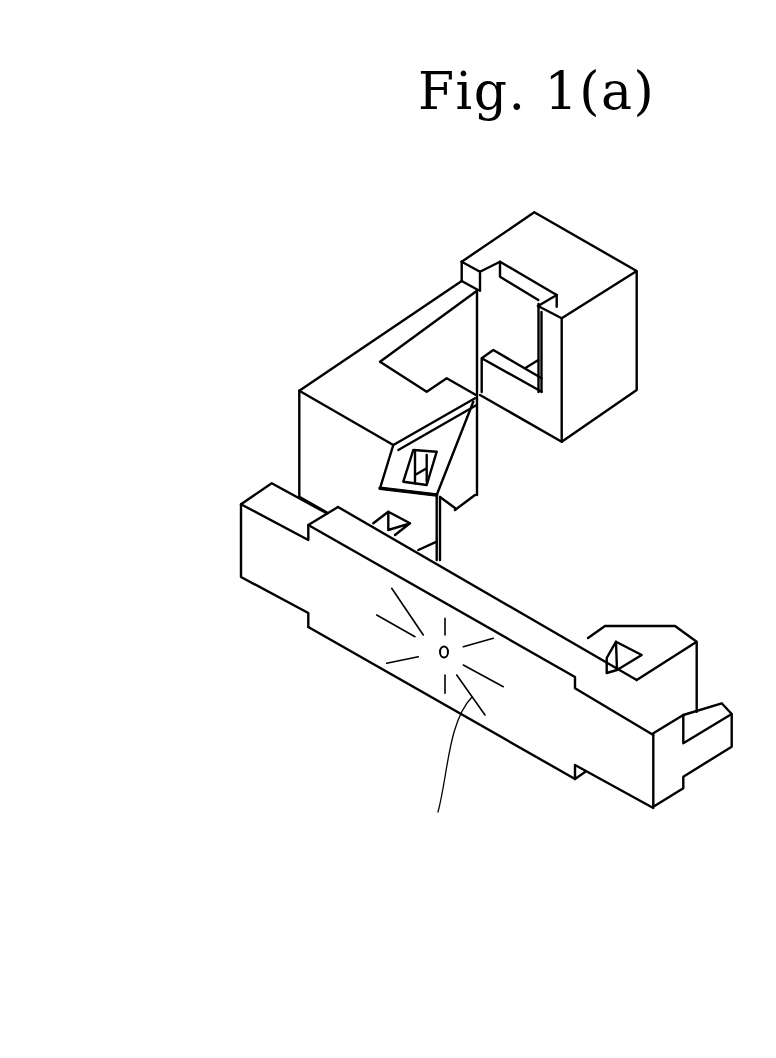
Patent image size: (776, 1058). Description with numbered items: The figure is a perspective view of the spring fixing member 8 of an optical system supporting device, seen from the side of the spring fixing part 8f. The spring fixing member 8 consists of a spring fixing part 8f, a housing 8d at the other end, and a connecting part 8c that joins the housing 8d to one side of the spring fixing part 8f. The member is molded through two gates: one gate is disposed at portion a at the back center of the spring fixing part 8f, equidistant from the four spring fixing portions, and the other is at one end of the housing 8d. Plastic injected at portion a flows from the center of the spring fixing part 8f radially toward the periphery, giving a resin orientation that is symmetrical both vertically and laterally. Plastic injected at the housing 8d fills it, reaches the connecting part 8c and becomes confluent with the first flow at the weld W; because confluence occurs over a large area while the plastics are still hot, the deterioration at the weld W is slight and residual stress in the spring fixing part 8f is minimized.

The spring fixing member 8 is at (368, 243).
The housing 8d is at (577, 255).
The connecting part 8c is at (393, 472).
The weld W is at (453, 522).
The spring fixing part 8f is at (480, 598).
The gate portion a is at (440, 656).